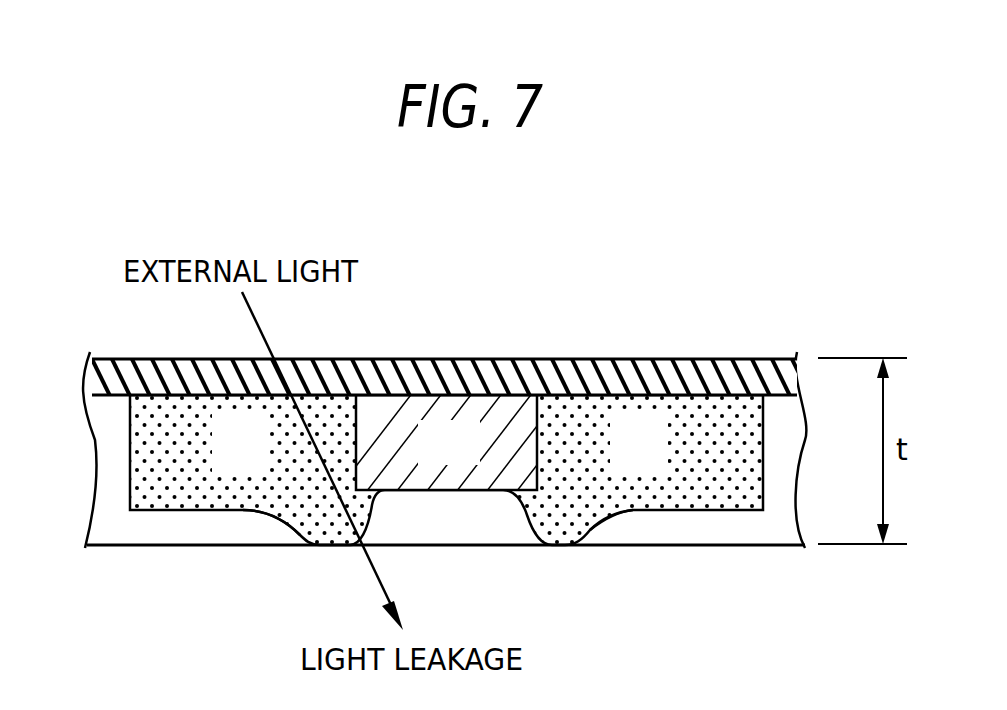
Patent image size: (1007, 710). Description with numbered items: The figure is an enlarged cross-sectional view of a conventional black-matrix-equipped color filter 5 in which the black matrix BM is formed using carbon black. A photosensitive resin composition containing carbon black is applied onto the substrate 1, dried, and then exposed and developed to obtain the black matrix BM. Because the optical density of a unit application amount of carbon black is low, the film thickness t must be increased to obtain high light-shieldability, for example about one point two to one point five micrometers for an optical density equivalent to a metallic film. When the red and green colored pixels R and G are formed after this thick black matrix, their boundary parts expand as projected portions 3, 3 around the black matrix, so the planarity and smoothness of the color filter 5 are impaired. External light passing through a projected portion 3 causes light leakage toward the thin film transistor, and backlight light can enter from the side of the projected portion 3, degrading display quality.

The substrate 1 is at (107, 378).
The projected portion 3 is at (325, 546).
The color filter 5 is at (730, 330).